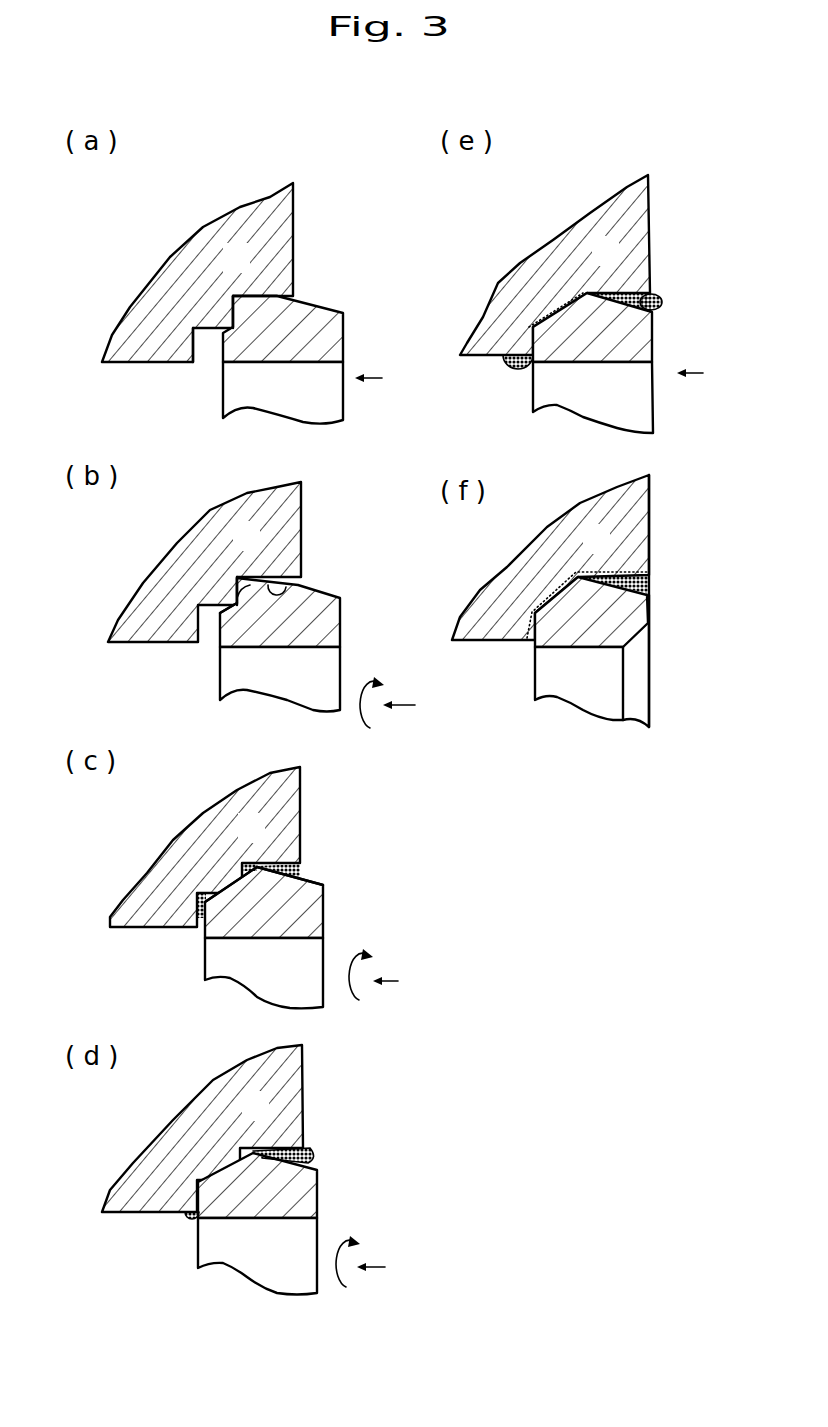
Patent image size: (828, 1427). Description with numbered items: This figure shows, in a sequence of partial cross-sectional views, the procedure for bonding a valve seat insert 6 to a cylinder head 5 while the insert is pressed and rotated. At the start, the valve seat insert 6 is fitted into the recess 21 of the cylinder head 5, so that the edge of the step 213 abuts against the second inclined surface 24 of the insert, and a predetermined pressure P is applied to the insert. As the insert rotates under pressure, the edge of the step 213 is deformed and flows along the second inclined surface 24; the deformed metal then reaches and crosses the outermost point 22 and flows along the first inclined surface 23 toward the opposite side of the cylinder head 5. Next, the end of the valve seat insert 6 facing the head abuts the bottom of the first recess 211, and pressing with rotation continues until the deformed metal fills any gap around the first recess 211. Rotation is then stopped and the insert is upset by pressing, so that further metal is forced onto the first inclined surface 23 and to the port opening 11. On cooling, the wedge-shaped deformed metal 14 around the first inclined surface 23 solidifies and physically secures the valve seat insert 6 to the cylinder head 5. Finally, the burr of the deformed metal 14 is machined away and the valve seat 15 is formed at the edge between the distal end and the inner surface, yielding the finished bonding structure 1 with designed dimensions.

The bonding structure 1 is at (680, 567).
The cylinder head 5 is at (247, 270).
The valve seat insert 6 is at (296, 402).
The port opening 11 is at (487, 357).
The deformed metal 14 is at (653, 300).
The valve seat 15 is at (638, 642).
The recess 21 is at (207, 346).
The outermost point 22 is at (287, 588).
The first inclined surface 23 is at (307, 880).
The second inclined surface 24 is at (247, 299).
The first recess 211 is at (190, 1197).
The step 213 is at (230, 310).
The pressure P is at (532, 824).